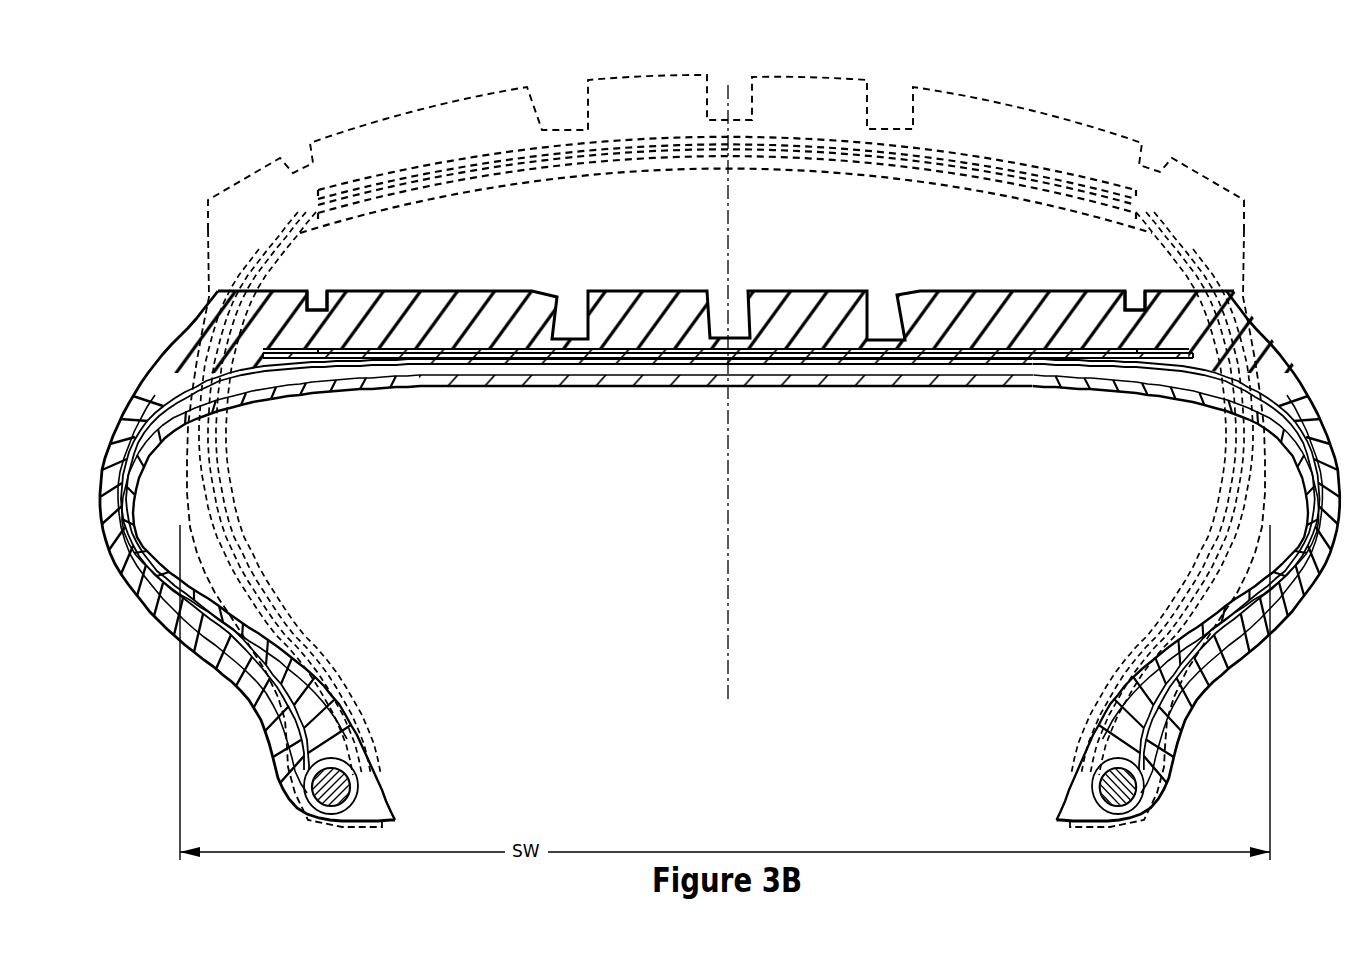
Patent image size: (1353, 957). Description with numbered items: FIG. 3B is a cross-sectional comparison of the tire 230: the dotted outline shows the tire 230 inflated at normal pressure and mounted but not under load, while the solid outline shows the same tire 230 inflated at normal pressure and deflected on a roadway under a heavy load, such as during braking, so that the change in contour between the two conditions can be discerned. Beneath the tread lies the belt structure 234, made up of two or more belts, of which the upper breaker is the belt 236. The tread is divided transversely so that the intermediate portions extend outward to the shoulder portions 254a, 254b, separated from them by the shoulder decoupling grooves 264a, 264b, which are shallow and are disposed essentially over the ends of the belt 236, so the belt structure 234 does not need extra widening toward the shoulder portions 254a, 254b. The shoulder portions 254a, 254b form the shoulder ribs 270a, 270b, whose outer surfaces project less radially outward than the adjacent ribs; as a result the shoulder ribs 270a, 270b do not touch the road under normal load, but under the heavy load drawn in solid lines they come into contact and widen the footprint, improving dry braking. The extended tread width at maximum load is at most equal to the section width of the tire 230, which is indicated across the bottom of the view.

The tire 230 is at (1041, 94).
The belt structure 234 is at (643, 337).
The belt 236 is at (380, 348).
The shoulder portion 254a is at (270, 290).
The shoulder portion 254b is at (1235, 333).
The shoulder decoupling groove 264a is at (316, 304).
The shoulder decoupling groove 264b is at (1135, 307).
The shoulder rib 270a is at (213, 299).
The shoulder rib 270b is at (1188, 286).